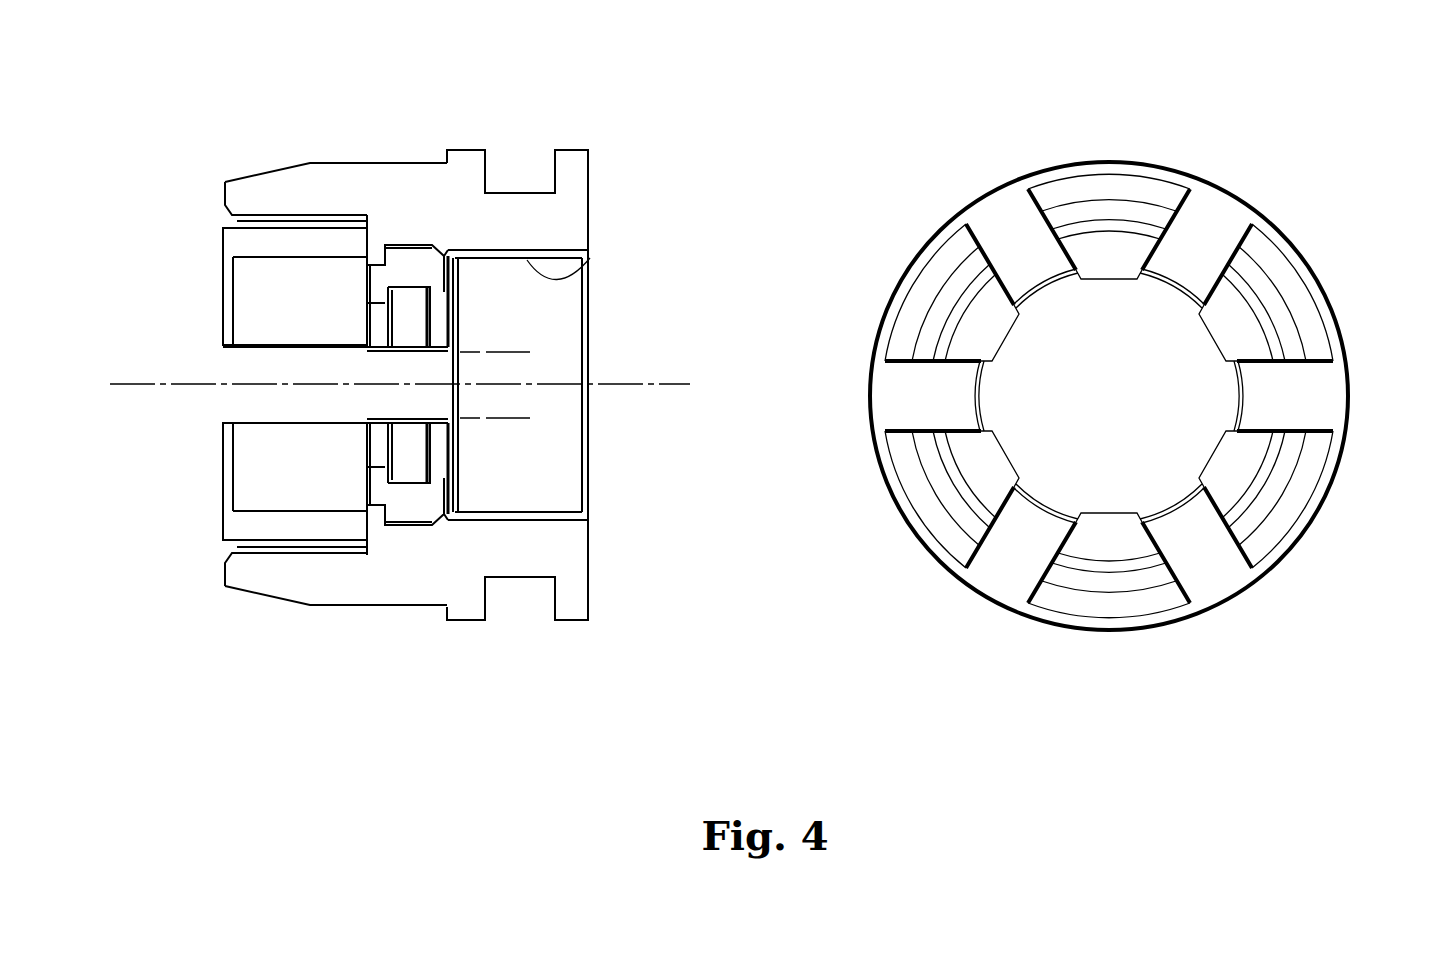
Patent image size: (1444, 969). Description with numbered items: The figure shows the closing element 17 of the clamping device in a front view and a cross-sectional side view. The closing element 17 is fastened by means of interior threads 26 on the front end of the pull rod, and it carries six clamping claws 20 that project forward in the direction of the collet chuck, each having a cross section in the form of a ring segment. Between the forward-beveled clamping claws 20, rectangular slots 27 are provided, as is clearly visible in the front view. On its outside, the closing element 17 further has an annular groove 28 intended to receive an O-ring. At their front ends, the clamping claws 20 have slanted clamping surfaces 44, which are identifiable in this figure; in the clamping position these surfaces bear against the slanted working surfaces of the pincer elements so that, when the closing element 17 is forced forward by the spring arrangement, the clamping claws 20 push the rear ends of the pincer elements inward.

The closing element 17 is at (437, 178).
The clamping claws 20 is at (312, 182).
The interior threads 26 is at (590, 265).
The rectangular slots 27 is at (228, 390).
The annular groove 28 is at (517, 603).
The slanted clamping surfaces 44 is at (227, 212).